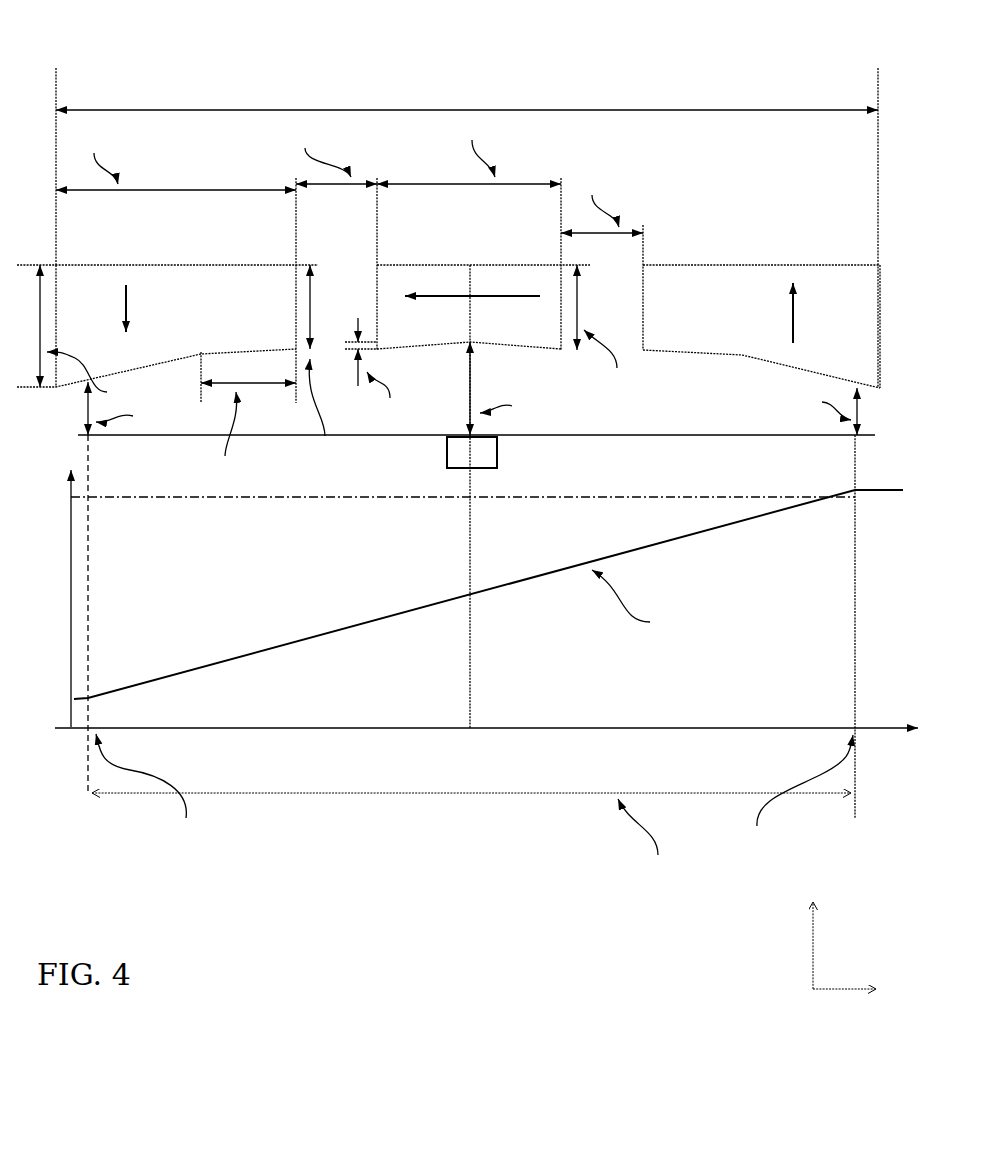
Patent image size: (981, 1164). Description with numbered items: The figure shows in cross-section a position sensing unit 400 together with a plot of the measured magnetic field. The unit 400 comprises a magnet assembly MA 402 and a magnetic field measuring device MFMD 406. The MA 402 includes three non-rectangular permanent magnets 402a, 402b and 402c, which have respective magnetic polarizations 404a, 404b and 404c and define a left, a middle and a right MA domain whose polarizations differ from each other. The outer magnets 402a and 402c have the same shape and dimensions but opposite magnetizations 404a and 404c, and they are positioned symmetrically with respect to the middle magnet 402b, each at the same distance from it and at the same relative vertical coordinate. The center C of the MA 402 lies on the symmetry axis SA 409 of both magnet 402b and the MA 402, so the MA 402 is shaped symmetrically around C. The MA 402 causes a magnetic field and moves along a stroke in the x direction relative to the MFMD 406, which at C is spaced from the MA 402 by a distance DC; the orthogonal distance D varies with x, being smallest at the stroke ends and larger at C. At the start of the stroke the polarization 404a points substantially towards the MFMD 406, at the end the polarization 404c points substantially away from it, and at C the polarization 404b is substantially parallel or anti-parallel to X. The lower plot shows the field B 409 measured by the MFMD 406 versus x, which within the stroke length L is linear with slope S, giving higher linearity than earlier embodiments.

The position sensing unit 400 is at (473, 510).
The MA (magnet assembly) 402 is at (751, 88).
The permanent magnet 402a is at (127, 257).
The permanent magnet 402b is at (498, 259).
The permanent magnet 402c is at (796, 249).
The magnetic polarization 404a is at (132, 307).
The magnetic polarization 404b is at (431, 284).
The magnetic polarization 404c is at (781, 308).
The MFMD (magnetic field measuring device) 406 is at (506, 455).
The SA / magnetic field B 409 is at (77, 457).